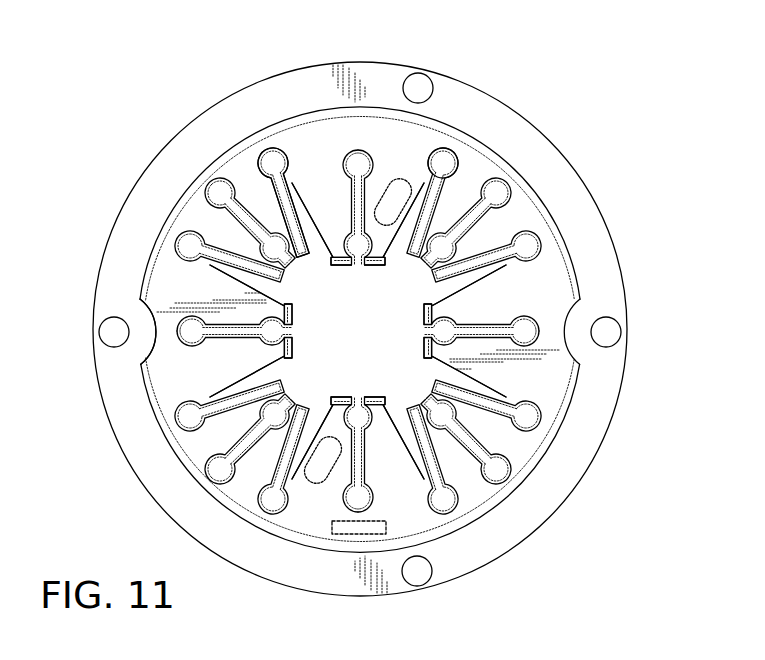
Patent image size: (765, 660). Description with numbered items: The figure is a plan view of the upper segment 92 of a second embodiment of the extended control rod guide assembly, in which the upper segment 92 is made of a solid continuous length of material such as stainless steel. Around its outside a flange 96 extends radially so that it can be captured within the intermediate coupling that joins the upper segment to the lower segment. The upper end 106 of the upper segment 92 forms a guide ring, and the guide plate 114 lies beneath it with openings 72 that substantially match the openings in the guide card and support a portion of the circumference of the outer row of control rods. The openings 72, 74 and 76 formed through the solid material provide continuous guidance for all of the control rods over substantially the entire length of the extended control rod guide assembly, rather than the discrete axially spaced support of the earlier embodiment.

The upper segment 92 is at (160, 140).
The flange 96 is at (530, 163).
The upper end 106 is at (547, 282).
The guide plate 114 is at (180, 374).
The openings 72 is at (456, 152).
The openings 74 is at (292, 183).
The openings 76 is at (373, 350).